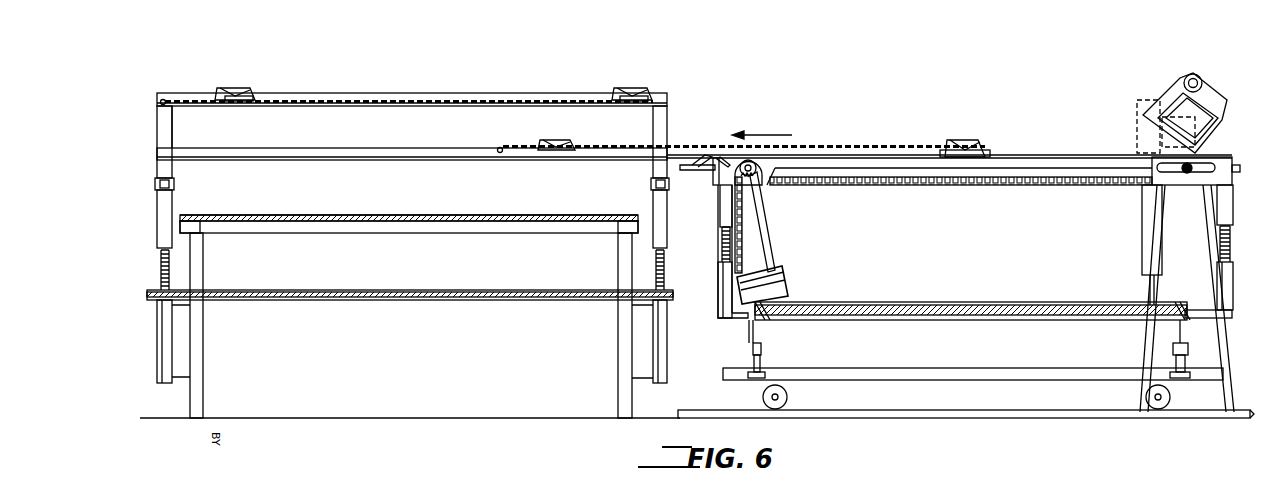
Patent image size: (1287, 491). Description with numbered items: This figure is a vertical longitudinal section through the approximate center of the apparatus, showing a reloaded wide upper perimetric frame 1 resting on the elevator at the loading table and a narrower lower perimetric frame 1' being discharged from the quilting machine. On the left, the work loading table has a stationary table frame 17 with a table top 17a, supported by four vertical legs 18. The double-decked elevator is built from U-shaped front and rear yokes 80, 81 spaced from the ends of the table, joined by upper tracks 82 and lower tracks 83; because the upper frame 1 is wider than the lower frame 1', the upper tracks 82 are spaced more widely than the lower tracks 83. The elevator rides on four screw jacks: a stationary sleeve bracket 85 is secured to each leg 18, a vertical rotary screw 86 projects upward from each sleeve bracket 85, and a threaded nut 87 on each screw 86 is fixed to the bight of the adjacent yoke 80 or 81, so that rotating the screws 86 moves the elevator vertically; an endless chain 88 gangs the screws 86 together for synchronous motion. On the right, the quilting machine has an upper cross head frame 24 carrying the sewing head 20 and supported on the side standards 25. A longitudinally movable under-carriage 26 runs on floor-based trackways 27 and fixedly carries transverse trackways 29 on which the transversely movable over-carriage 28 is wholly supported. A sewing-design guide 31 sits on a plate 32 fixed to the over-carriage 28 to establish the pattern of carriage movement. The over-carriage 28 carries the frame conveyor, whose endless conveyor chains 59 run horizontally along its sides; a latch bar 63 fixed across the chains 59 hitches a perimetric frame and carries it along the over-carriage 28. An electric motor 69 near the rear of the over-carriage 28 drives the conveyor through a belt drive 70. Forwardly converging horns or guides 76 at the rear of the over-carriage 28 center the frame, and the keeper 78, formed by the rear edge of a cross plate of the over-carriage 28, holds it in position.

The upper perimetric frame 1 is at (407, 82).
The lower perimetric frame 1' is at (742, 127).
The table frame 17 is at (463, 229).
The table top 17a is at (437, 214).
The vertical legs 18 is at (197, 328).
The sewing head 20 is at (1140, 113).
The upper cross head frame 24 is at (1212, 140).
The side standards 25 is at (1192, 275).
The under-carriage 26 is at (867, 373).
The trackways 27 is at (855, 414).
The over-carriage 28 is at (985, 175).
The trackways 29 is at (763, 369).
The sewing-design guide 31 is at (917, 300).
The plate 32 is at (1068, 308).
The conveyor chains 59 is at (1063, 182).
The latch bar 63 is at (947, 160).
The electric motor 69 is at (777, 283).
The belt drive 70 is at (767, 223).
The horns or guides 76 is at (711, 173).
The keeper 78 is at (679, 164).
The front yoke 80 is at (663, 118).
The rear yoke 81 is at (163, 120).
The upper tracks 82 is at (192, 97).
The lower tracks 83 is at (208, 150).
The sleeve bracket 85 is at (160, 326).
The vertical rotary screw 86 is at (172, 266).
The nut 87 is at (173, 207).
The endless chain 88 is at (357, 300).